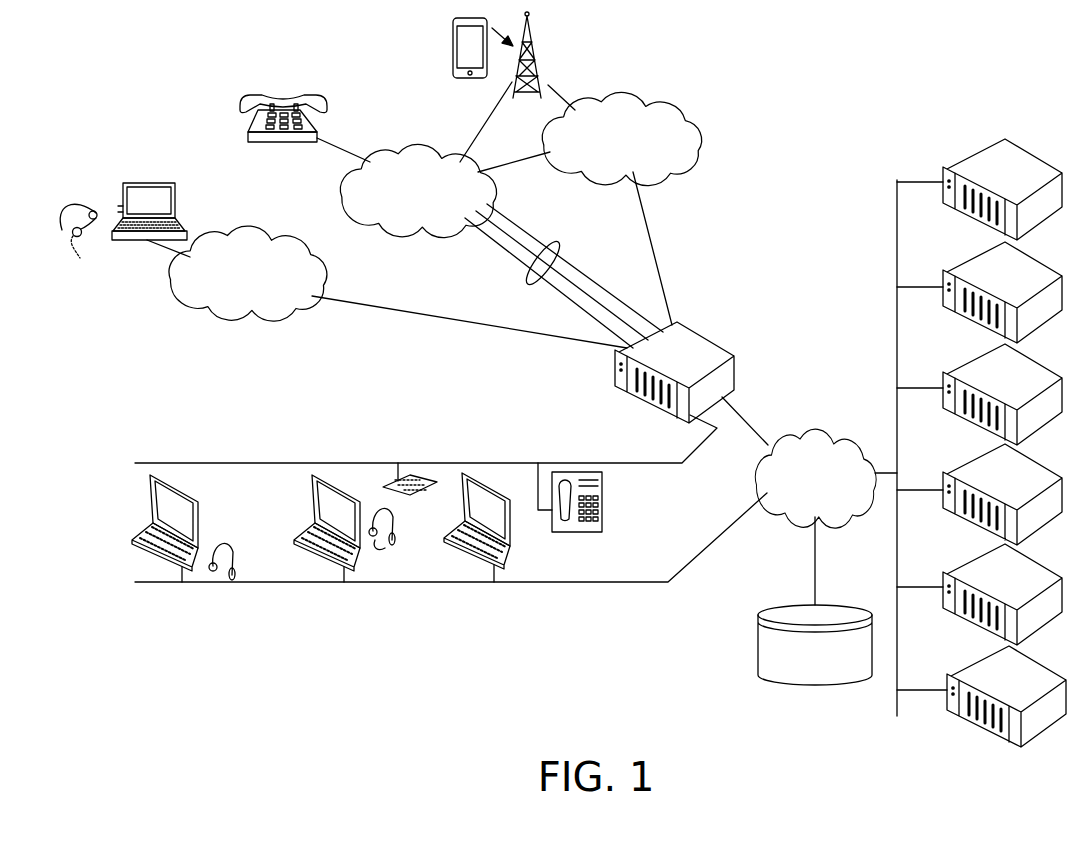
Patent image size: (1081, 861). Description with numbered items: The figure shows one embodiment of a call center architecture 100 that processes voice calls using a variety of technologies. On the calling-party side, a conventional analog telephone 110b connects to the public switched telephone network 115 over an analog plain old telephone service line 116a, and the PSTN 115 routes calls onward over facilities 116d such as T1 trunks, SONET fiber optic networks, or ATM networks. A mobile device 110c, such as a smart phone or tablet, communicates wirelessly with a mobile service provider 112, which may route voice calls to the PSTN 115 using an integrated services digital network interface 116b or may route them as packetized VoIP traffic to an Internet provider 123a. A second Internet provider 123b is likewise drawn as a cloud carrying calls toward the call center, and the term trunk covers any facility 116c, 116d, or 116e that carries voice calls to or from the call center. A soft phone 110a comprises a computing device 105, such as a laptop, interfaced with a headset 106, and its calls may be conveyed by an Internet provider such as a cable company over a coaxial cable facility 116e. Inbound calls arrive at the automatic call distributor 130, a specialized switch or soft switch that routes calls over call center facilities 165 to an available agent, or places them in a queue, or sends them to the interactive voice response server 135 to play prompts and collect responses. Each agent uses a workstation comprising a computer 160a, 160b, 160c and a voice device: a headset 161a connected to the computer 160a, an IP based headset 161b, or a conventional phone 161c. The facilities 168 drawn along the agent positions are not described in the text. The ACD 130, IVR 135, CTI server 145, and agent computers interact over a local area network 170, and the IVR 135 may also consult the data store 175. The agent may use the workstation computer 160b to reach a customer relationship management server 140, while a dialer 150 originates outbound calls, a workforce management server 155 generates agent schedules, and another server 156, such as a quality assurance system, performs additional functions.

The call center architecture 100 is at (822, 97).
The computing device 105 is at (122, 208).
The headset 106 is at (86, 240).
The soft phone 110a is at (148, 176).
The conventional analog telephone 110b is at (317, 128).
The mobile device 110c is at (453, 52).
The mobile service provider 112 is at (540, 66).
The public switched telephone network 115 is at (445, 190).
The analog plain old telephone service line 116a is at (347, 154).
The integrated services digital network interface 116b is at (490, 108).
The facility 116c is at (655, 246).
The facilities 116d is at (527, 273).
The coaxial cable facility 116e is at (456, 320).
The Internet provider 123a is at (248, 273).
The Internet provider 123b is at (621, 138).
The automatic call distributor 130 is at (691, 383).
The interactive voice response server 135 is at (979, 189).
The customer relationship management server 140 is at (979, 292).
The CTI server 145 is at (979, 394).
The dialer 150 is at (979, 494).
The workforce management server 155 is at (979, 594).
The server 156 is at (981, 696).
The computer 160a is at (200, 518).
The computer 160b is at (355, 520).
The computer 160c is at (510, 518).
The headset 161a is at (238, 558).
The IP based headset 161b is at (397, 532).
The conventional phone 161c is at (584, 533).
The call center facilities 165 is at (632, 462).
The facility 168 is at (643, 583).
The local area network 170 is at (760, 498).
The data store 175 is at (815, 601).